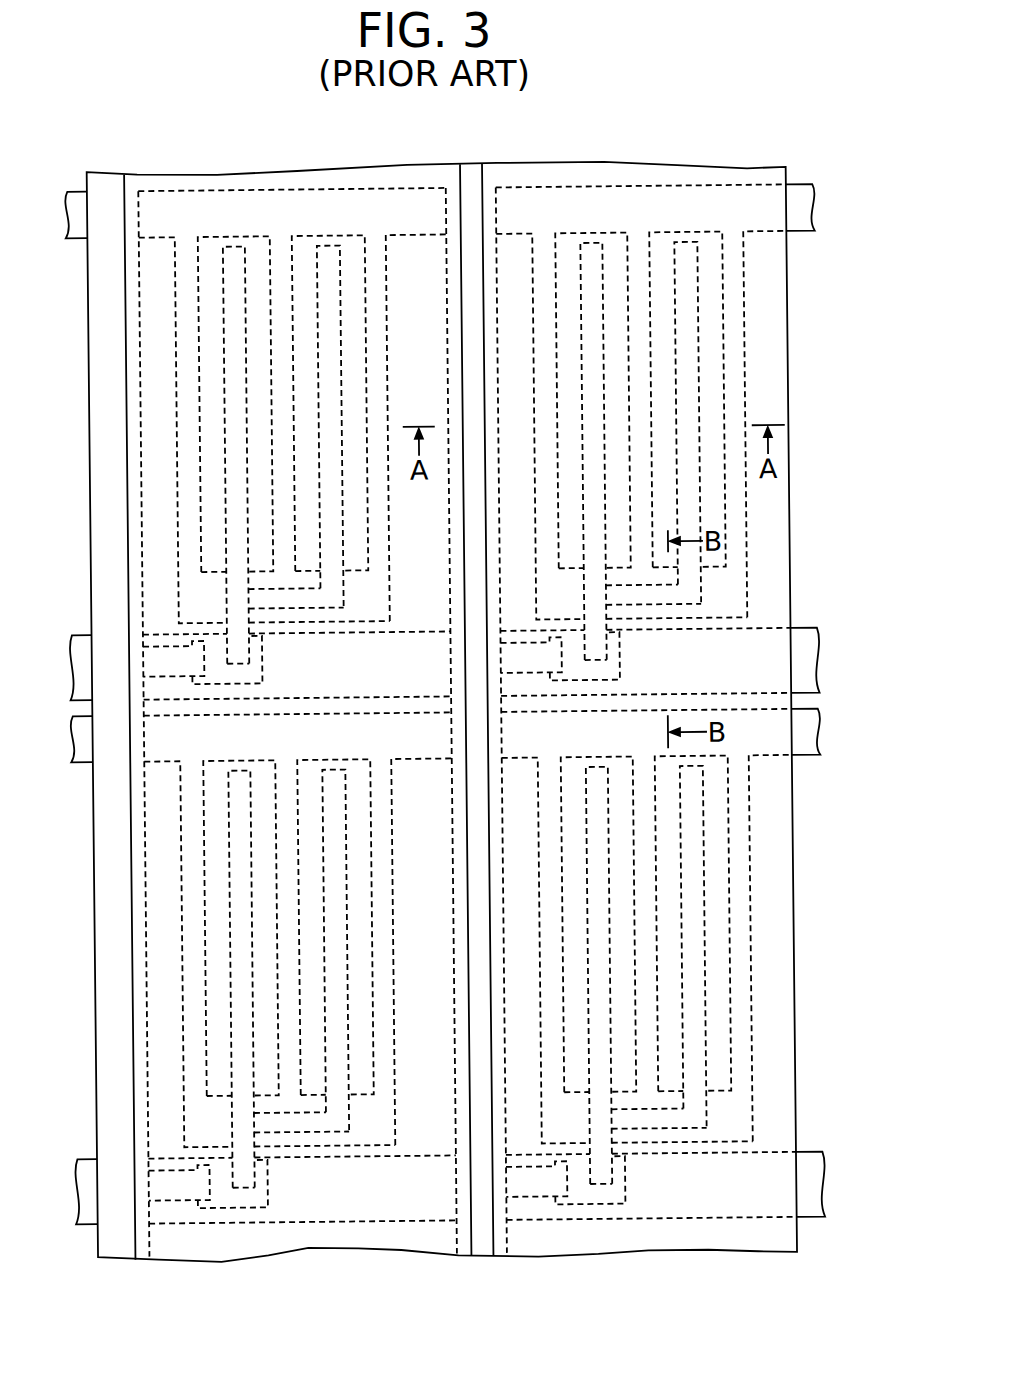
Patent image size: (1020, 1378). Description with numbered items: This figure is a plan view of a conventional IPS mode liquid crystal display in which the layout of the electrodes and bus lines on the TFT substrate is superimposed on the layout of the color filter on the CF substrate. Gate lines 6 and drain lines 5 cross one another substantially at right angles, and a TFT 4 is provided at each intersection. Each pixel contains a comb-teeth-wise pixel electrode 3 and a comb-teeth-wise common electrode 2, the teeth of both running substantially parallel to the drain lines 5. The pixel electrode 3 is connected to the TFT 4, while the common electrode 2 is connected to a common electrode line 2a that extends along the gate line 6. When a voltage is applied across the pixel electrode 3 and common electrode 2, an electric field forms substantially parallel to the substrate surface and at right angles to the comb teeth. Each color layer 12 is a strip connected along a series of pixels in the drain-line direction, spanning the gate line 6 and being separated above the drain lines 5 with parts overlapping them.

The common electrode 2 is at (186, 370).
The common electrode line 2a is at (272, 212).
The pixel electrode 3 is at (233, 587).
The TFT 4 is at (198, 639).
The drain line 5 is at (109, 1236).
The gate line 6 is at (810, 671).
The color layer 12 is at (414, 182).